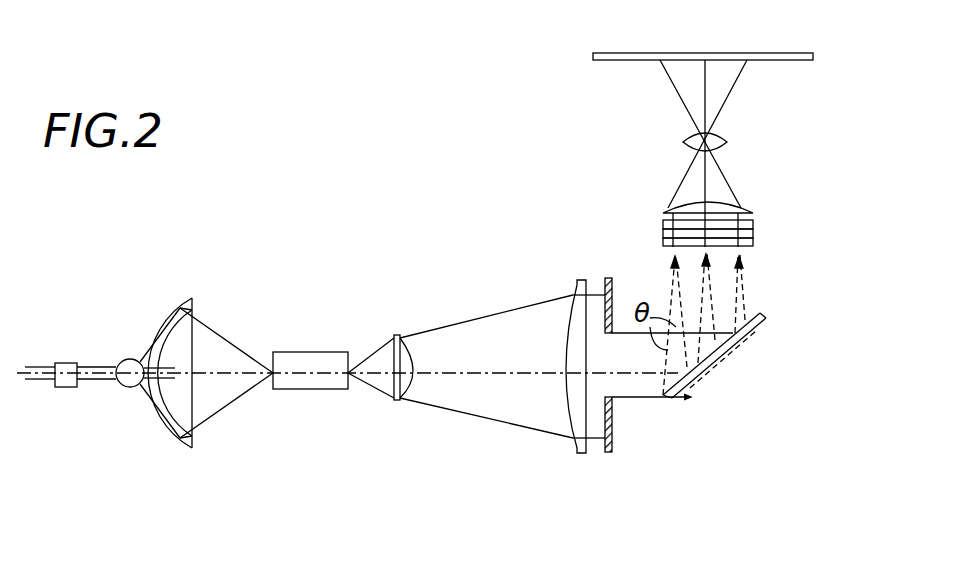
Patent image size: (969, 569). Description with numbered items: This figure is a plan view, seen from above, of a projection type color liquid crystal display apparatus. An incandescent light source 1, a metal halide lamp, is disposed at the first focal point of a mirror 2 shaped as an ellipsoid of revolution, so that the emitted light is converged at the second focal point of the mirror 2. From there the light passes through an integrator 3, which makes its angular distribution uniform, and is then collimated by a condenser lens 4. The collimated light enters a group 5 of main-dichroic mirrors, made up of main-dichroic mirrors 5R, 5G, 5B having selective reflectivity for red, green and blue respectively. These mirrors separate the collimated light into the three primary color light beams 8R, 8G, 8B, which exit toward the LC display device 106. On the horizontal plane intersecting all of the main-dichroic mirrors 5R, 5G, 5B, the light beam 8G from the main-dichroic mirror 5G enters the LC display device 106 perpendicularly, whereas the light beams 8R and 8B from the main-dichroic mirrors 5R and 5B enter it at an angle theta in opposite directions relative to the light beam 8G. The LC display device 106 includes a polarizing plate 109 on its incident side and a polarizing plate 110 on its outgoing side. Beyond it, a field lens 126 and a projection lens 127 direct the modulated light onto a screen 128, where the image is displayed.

The incandescent light source 1 is at (130, 387).
The mirror 2 is at (138, 305).
The integrator 3 is at (324, 350).
The condenser lens 4 is at (577, 453).
The group of main-dichroic mirrors 5 is at (741, 415).
The main-dichroic mirror 5B is at (663, 400).
The main-dichroic mirror 5G is at (702, 367).
The main-dichroic mirror 5R is at (747, 372).
The light beam 8B is at (672, 273).
The light beam 8G is at (672, 302).
The light beam 8R is at (743, 289).
The LC display device 106 is at (663, 231).
The polarizing plate 109 is at (753, 245).
The polarizing plate 110 is at (753, 218).
The field lens 126 is at (755, 203).
The projection lens 127 is at (720, 133).
The screen 128 is at (780, 58).